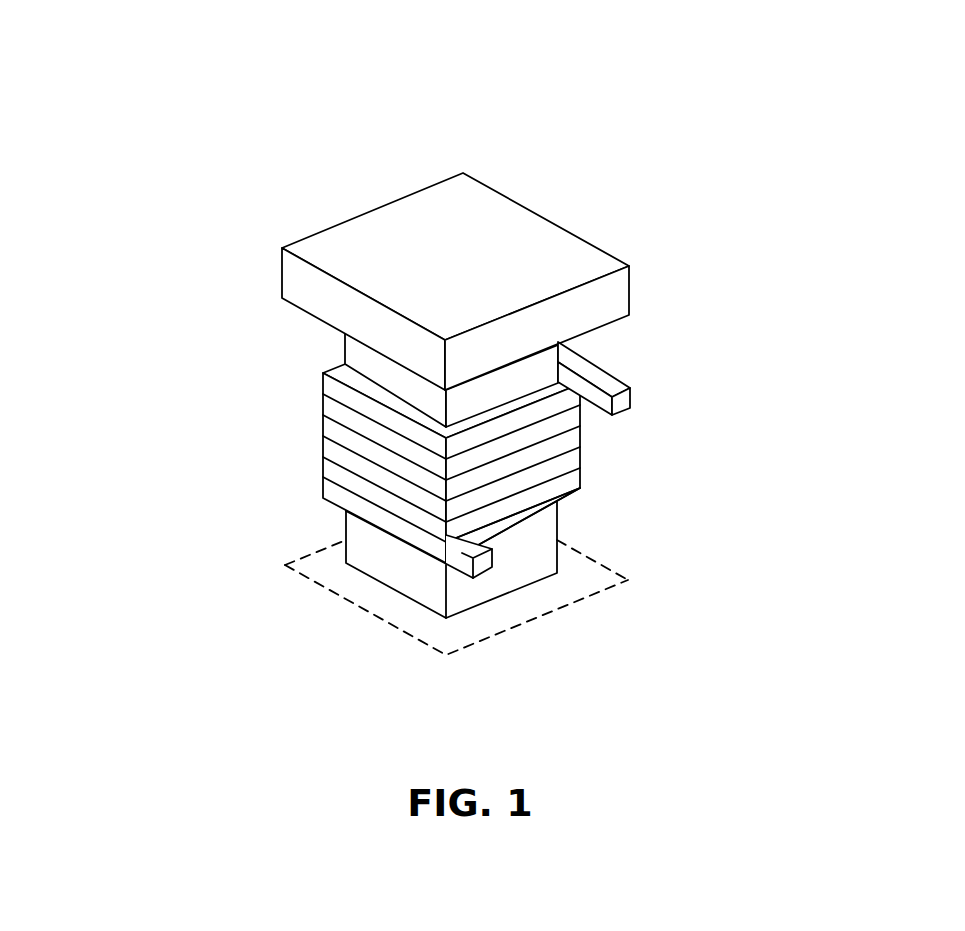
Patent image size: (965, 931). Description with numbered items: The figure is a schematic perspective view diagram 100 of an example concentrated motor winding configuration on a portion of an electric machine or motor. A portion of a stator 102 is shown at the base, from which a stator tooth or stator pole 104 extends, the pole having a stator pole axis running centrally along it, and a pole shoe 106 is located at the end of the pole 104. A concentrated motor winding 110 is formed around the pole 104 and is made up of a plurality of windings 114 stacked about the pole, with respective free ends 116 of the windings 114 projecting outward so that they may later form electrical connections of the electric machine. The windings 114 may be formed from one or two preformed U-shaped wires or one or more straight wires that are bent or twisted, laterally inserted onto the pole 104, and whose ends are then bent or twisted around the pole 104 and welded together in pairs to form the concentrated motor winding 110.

The schematic perspective view diagram 100 is at (851, 105).
The stator 102 is at (617, 562).
The stator pole 104 is at (565, 506).
The pole shoe 106 is at (534, 196).
The concentrated motor winding 110 is at (322, 418).
The windings 114 is at (523, 511).
The free ends 116 is at (634, 392).